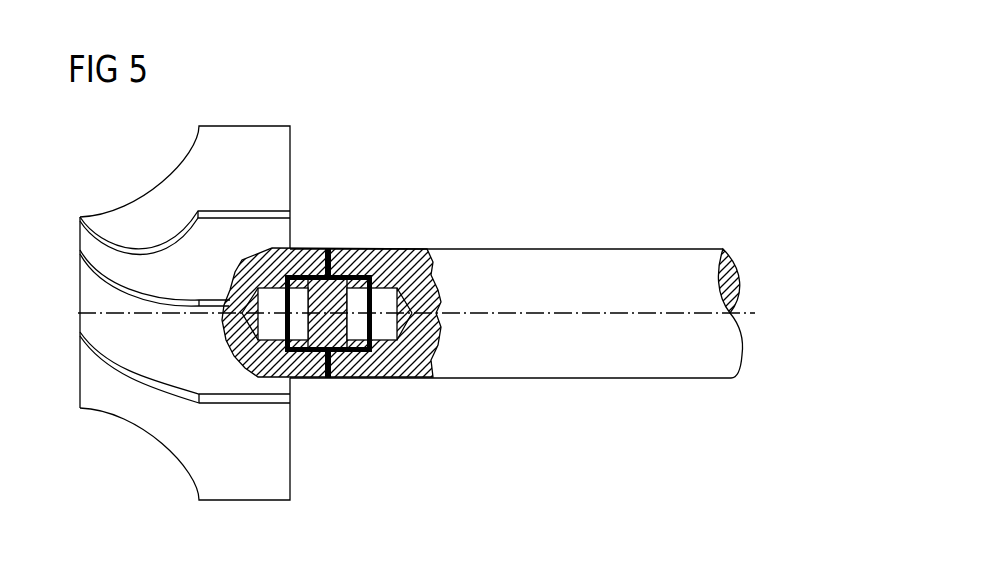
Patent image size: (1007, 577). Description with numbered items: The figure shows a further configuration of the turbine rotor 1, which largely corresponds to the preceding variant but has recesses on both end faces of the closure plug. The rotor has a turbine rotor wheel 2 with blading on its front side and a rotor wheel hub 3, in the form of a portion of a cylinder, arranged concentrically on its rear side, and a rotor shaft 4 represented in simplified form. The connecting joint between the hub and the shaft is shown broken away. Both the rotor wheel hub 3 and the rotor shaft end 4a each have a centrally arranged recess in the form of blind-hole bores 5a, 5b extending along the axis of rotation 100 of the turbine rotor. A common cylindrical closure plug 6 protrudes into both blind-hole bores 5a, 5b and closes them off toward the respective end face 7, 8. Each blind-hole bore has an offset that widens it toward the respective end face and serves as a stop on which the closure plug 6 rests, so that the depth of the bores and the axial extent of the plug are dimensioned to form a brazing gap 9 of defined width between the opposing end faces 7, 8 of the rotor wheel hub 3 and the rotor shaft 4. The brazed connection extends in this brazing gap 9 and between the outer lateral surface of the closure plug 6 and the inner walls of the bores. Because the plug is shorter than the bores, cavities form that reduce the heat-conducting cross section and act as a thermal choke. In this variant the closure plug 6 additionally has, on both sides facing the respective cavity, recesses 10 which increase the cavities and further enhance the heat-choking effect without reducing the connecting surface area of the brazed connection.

The turbine rotor 1 is at (488, 150).
The turbine rotor wheel 2 is at (200, 168).
The rotor wheel hub 3 is at (305, 258).
The rotor shaft 4 is at (522, 263).
The rotor shaft end 4a is at (362, 258).
The blind-hole bore 5a is at (383, 333).
The blind-hole bore 5b is at (270, 327).
The closure plug 6 is at (347, 320).
The end face 7 is at (333, 363).
The end face 8 is at (323, 365).
The brazing gap 9 is at (343, 262).
The recess 10 is at (298, 302).
The axis of rotation 100 is at (595, 311).